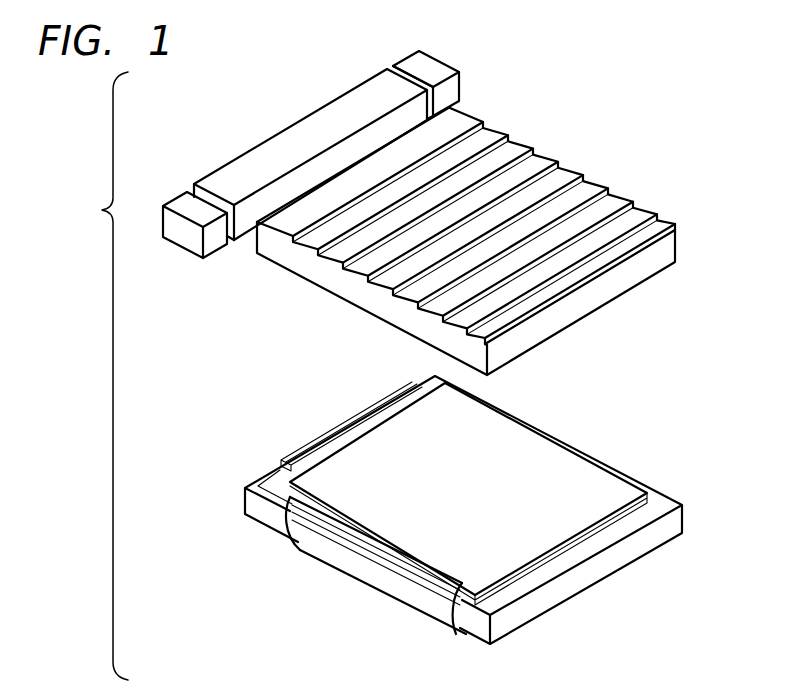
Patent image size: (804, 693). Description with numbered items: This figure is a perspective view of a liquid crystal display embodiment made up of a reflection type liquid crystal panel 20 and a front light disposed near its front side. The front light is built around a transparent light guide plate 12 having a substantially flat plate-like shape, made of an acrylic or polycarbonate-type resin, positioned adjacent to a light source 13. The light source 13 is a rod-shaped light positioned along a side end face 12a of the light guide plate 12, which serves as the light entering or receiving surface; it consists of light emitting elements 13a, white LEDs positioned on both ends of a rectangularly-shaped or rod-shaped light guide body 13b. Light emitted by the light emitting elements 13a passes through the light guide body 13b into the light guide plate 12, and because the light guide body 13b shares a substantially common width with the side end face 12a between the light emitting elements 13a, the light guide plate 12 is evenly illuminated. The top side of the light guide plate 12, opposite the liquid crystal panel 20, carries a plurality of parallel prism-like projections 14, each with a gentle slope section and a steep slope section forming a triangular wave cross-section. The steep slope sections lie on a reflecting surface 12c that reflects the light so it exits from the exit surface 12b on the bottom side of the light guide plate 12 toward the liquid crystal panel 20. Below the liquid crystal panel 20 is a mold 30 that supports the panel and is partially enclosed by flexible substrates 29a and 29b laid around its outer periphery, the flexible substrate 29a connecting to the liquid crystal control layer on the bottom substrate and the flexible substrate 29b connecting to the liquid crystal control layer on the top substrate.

The light guide plate 12 is at (273, 253).
The side end face 12a is at (362, 155).
The exit surface 12b is at (592, 318).
The reflecting surface 12c is at (612, 200).
The light source 13 is at (345, 140).
The light emitting elements 13a is at (178, 205).
The light guide body 13b is at (290, 140).
The projections 14 is at (567, 182).
The liquid crystal panel 20 is at (544, 472).
The flexible substrate 29a is at (330, 432).
The flexible substrate 29b is at (330, 555).
The mold 30 is at (700, 522).